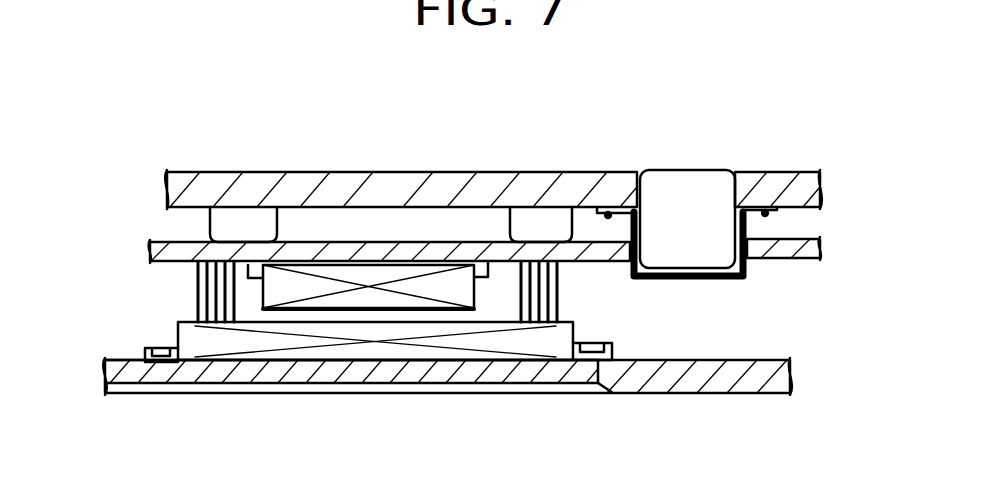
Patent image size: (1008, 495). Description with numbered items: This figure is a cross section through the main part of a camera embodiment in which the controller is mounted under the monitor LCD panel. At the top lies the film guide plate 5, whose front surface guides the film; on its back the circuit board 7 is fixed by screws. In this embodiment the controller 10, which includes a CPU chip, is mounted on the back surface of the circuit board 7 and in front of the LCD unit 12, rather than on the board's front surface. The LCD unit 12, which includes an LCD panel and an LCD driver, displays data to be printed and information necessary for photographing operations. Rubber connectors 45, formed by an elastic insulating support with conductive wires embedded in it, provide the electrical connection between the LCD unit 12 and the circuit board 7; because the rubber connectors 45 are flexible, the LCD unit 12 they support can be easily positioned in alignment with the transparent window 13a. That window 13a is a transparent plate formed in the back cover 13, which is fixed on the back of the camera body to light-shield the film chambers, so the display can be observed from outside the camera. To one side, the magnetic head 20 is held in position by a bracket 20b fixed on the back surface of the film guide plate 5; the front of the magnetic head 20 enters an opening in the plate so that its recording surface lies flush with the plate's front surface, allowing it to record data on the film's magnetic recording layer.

The film guide plate 5 is at (562, 185).
The circuit board 7 is at (806, 252).
The controller 10 is at (369, 270).
The LCD unit 12 is at (363, 354).
The back cover 13 is at (718, 383).
The window 13a is at (493, 380).
The magnetic head 20 is at (690, 188).
The bracket 20b is at (697, 282).
The rubber connectors 45 is at (555, 293).